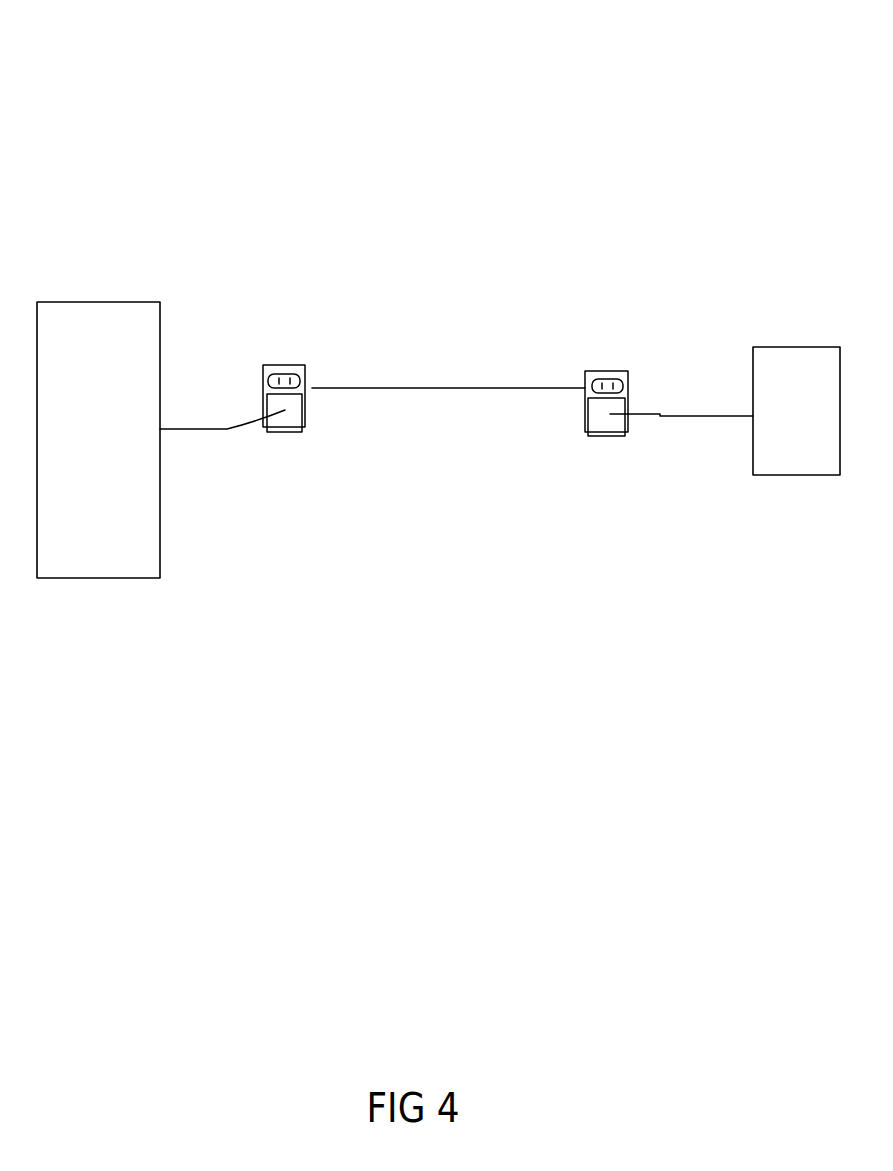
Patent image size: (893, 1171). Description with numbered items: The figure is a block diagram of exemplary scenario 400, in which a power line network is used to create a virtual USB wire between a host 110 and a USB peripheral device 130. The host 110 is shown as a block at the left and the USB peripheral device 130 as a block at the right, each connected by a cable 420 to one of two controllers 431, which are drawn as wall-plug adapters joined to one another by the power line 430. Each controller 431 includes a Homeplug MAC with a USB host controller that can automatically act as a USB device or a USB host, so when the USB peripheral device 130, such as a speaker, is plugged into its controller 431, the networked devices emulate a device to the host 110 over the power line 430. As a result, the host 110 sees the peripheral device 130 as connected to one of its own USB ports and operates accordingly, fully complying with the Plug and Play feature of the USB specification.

The exemplary scenario 400 is at (854, 40).
The host 110 is at (160, 302).
The USB peripheral device 130 is at (797, 347).
The power cable 420 is at (200, 430).
The power line 430 is at (433, 388).
The controller 431 is at (288, 432).